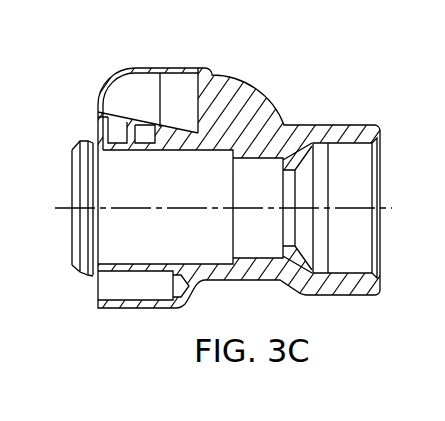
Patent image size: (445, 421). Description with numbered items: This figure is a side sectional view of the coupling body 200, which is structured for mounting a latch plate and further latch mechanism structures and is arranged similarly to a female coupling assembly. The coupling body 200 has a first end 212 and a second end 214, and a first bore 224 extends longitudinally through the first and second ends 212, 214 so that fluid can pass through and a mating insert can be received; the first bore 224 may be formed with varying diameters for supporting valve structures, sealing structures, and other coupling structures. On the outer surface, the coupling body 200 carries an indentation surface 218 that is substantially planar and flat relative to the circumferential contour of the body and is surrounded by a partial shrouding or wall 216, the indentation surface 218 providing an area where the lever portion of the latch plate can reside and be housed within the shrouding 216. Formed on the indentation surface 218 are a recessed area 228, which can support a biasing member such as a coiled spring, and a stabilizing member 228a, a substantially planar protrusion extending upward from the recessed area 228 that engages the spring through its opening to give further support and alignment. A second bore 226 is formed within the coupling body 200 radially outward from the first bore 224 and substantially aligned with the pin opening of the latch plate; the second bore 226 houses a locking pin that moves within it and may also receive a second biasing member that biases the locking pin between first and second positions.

The coupling body 200 is at (324, 88).
The first end 212 is at (71, 264).
The second end 214 is at (380, 230).
The shrouding 216 is at (172, 68).
The indentation surface 218 is at (202, 92).
The first bore 224 is at (182, 194).
The second bore 226 is at (133, 304).
The recessed area 228 is at (117, 133).
The stabilizing member 228a is at (130, 124).